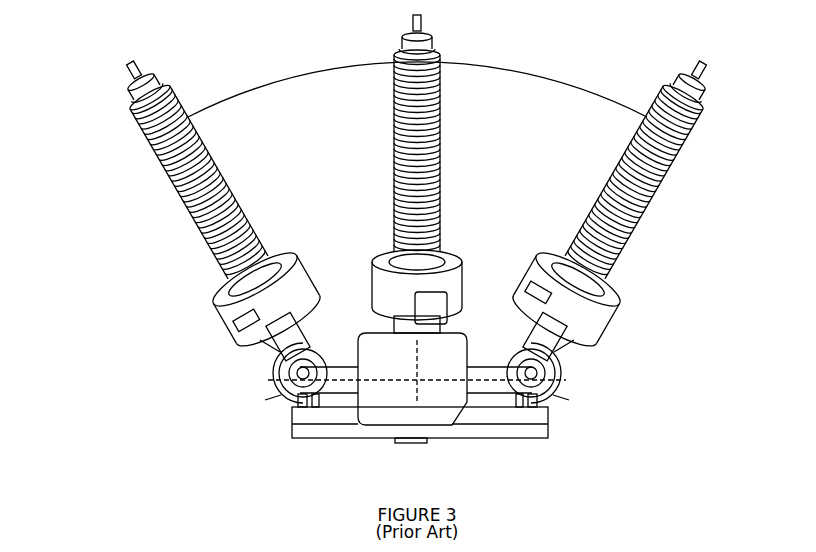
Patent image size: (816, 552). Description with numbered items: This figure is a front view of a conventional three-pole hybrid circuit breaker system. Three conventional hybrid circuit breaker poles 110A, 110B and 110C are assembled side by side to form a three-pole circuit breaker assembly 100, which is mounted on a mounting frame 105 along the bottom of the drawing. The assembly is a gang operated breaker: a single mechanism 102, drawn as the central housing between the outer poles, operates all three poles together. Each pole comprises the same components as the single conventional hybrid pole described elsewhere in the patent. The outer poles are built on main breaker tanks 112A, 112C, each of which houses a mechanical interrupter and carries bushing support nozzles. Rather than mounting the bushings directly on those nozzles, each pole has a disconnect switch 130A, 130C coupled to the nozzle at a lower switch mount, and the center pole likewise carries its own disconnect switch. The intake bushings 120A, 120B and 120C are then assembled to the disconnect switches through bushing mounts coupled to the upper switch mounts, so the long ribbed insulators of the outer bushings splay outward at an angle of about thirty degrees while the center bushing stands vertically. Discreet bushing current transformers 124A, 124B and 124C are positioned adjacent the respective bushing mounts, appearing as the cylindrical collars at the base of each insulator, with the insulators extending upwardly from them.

The 3-pole circuit breaker assembly 100 is at (343, 31).
The single mechanism 102 is at (390, 412).
The mounting frame 105 is at (290, 427).
The hybrid circuit breaker pole 110A is at (172, 257).
The hybrid circuit breaker pole 110B is at (375, 208).
The hybrid circuit breaker pole 110C is at (543, 232).
The main breaker tank 112A is at (278, 368).
The main breaker tank 112C is at (553, 366).
The intake bushing 120A is at (168, 180).
The intake bushing 120B is at (393, 88).
The intake bushing 120C is at (615, 167).
The current transformer 124A is at (213, 298).
The current transformer 124B is at (380, 256).
The current transformer 124C is at (620, 290).
The disconnect switch 130A is at (277, 349).
The disconnect switch 130C is at (563, 352).